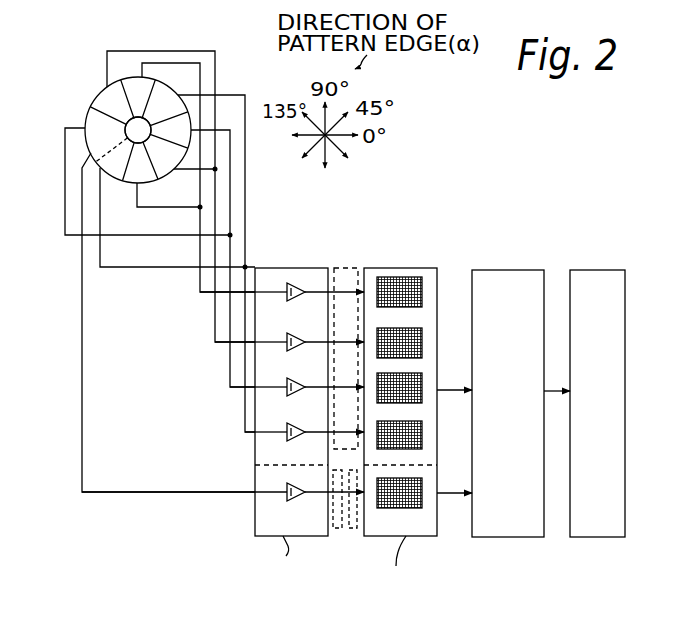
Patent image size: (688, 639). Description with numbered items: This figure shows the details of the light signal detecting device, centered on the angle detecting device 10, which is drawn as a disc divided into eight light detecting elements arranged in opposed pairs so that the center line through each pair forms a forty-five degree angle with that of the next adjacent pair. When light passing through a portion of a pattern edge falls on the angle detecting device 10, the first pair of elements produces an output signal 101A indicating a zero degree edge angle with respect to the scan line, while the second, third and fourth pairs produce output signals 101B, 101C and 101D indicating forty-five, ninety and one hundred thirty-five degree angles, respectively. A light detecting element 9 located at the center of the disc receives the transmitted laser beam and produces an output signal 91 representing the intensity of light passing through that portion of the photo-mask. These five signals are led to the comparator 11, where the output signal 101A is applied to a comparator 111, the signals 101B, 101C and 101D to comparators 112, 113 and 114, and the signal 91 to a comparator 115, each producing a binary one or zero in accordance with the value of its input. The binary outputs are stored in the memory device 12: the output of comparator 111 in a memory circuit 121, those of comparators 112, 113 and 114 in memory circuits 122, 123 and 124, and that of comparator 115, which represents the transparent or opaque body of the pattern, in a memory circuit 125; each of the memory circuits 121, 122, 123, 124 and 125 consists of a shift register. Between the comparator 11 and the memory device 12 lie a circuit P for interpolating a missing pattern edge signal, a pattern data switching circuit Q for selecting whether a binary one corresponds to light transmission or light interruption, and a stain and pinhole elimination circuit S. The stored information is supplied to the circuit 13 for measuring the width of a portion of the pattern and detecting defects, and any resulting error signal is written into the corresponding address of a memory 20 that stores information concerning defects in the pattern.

The light detecting element 9 is at (141, 130).
The angle detecting device 10 is at (185, 83).
The comparator 11 is at (286, 268).
The memory device 12 is at (402, 268).
The circuit for measuring the width of a portion of a pattern and detecting defects 13 is at (505, 270).
The memory 20 is at (598, 270).
The output signal 91 is at (143, 493).
The output signal 101A is at (206, 306).
The output signal 101B is at (212, 356).
The output signal 101C is at (222, 400).
The output signal 101D is at (230, 443).
The comparator 111 is at (297, 301).
The comparator 112 is at (297, 351).
The comparator 113 is at (297, 396).
The comparator 114 is at (297, 441).
The comparator 115 is at (297, 501).
The memory circuit 121 is at (422, 296).
The memory circuit 122 is at (422, 344).
The memory circuit 123 is at (422, 388).
The memory circuit 124 is at (422, 436).
The memory circuit 125 is at (422, 492).
The circuit for interpolating a missing pattern edge signal P is at (346, 268).
The pattern data switching circuit Q is at (337, 528).
The stain and pinhole elimination circuit S is at (353, 528).